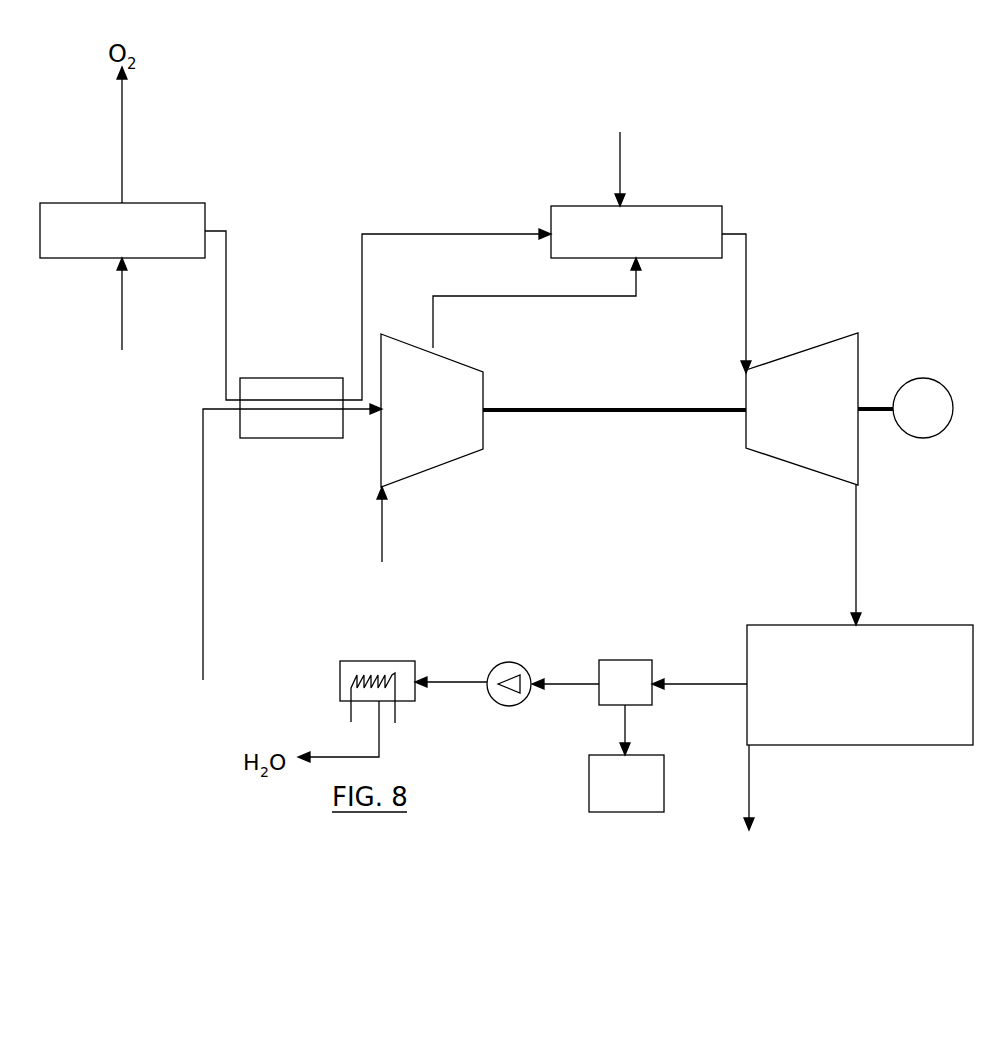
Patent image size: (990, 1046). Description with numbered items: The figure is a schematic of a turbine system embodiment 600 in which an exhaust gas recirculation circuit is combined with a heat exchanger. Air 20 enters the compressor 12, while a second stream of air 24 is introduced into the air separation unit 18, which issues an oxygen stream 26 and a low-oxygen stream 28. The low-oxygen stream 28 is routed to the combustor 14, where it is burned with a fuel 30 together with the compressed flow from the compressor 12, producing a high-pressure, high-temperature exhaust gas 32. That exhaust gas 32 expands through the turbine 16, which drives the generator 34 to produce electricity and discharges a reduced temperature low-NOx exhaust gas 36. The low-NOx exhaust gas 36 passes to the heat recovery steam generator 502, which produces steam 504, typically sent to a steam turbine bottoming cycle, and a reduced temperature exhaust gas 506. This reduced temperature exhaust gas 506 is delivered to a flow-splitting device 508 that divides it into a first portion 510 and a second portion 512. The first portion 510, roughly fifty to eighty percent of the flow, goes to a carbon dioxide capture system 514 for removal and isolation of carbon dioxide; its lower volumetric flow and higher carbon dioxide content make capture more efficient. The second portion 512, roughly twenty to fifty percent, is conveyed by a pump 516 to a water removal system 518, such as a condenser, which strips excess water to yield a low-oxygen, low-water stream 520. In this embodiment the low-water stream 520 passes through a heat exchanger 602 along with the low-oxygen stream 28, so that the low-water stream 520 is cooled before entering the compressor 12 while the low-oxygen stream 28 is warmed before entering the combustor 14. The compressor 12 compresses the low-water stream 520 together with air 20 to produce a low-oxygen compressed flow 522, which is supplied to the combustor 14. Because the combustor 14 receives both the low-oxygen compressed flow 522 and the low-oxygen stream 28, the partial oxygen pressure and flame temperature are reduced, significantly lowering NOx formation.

The embodiment 600 is at (295, 105).
The air separation unit 18 is at (109, 248).
The oxygen stream 26 is at (140, 135).
The second stream of air 24 is at (122, 319).
The low-oxygen stream 28 is at (378, 301).
The heat exchanger 602 is at (292, 438).
The low-oxygen, low-water stream 520 is at (292, 542).
The compressor 12 is at (410, 427).
The low-oxygen compressed flow 522 is at (537, 303).
The combustor 14 is at (623, 246).
The fuel 30 is at (624, 154).
The high-pressure, high temperature exhaust gas 32 is at (753, 303).
The turbine 16 is at (790, 419).
The generator 34 is at (922, 379).
The low-NOx exhaust gas 36 is at (880, 555).
The heat recovery steam generator 502 is at (840, 702).
The steam 504 is at (751, 806).
The reduced temperature exhaust gas 506 is at (699, 673).
The flow-splitting device 508 is at (645, 696).
The first portion 510 is at (648, 730).
The carbon dioxide capture system 514 is at (606, 795).
The second portion 512 is at (565, 673).
The pump 516 is at (510, 660).
The water removal system 518 is at (377, 661).
The air 20 is at (384, 541).